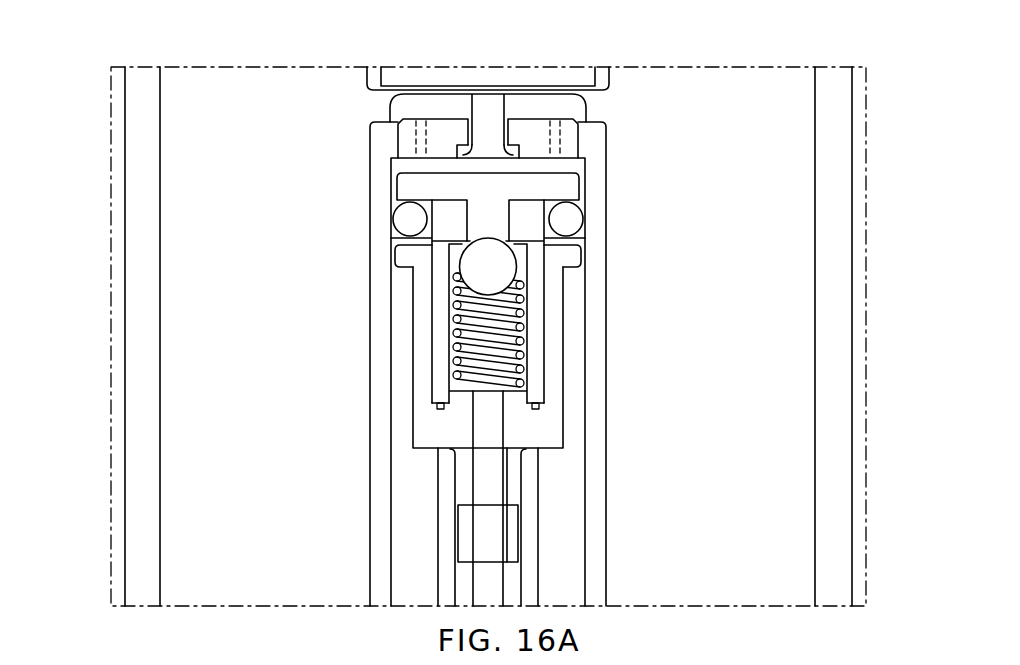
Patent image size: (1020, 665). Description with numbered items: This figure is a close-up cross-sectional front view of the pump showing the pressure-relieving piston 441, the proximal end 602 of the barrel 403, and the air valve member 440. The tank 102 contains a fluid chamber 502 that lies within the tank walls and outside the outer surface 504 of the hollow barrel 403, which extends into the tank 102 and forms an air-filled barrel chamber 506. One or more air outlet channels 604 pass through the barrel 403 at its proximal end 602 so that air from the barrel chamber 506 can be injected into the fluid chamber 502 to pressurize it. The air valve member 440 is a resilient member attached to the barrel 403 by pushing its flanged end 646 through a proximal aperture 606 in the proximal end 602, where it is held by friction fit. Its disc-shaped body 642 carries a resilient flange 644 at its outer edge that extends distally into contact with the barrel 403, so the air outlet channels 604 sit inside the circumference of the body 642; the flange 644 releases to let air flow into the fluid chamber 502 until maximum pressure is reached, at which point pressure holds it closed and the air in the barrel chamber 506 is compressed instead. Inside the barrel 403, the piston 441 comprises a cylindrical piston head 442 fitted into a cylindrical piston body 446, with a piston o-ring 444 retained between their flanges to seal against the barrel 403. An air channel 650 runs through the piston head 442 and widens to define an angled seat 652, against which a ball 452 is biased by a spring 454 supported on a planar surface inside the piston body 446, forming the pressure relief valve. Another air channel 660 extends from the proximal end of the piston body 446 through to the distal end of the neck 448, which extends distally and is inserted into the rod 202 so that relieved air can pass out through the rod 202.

The tank 102 is at (860, 247).
The fluid chamber 502 is at (213, 351).
The disc-shaped body 642 is at (452, 101).
The air valve member 440 is at (516, 97).
The proximal end of the barrel 602 is at (600, 120).
The resilient flange 644 is at (388, 123).
The air outlet channels 604 is at (560, 142).
The proximal aperture 606 is at (467, 133).
The flanged end 646 is at (505, 153).
The outer surface of the barrel 504 is at (608, 548).
The barrel 403 is at (607, 455).
The piston head 442 is at (397, 190).
The piston o-ring 444 is at (576, 223).
The air channel 650 is at (466, 200).
The pressure-relieving piston 441 is at (565, 318).
The piston body 446 is at (565, 402).
The seat 652 is at (507, 243).
The spring 454 is at (515, 330).
The ball 452 is at (460, 276).
The air channel 660 is at (472, 412).
The neck 448 is at (456, 469).
The rod 202 is at (539, 512).
The barrel chamber 506 is at (405, 565).